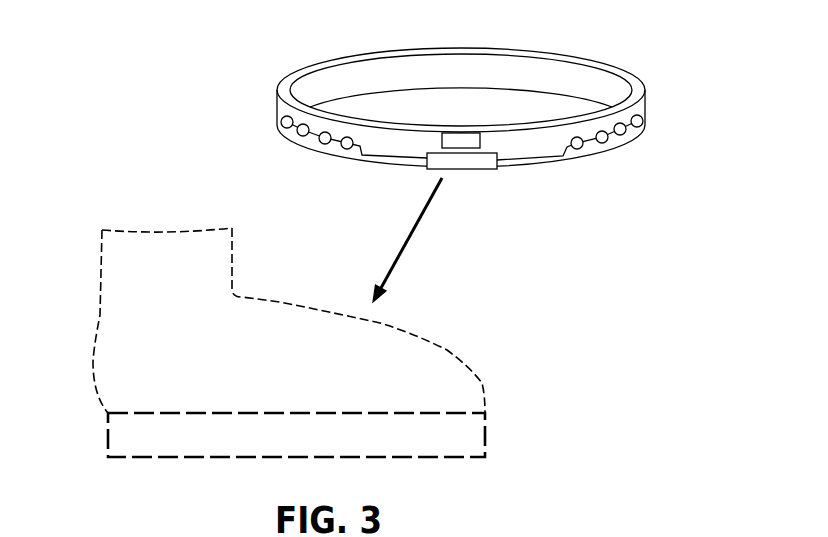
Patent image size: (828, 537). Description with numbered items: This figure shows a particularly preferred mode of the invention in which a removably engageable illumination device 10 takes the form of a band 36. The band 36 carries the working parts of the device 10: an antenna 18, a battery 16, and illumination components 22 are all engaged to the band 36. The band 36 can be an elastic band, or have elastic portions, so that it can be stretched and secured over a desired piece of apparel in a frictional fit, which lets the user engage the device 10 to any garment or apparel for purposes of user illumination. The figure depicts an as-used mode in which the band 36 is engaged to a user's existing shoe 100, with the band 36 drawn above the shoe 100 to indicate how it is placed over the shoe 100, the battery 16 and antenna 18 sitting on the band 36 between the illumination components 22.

The removably engageable illumination device 10 is at (509, 121).
The battery 16 is at (452, 133).
The antenna 18 is at (470, 169).
The illumination components 22 is at (300, 135).
The band 36 is at (333, 63).
The shoe 100 is at (96, 340).